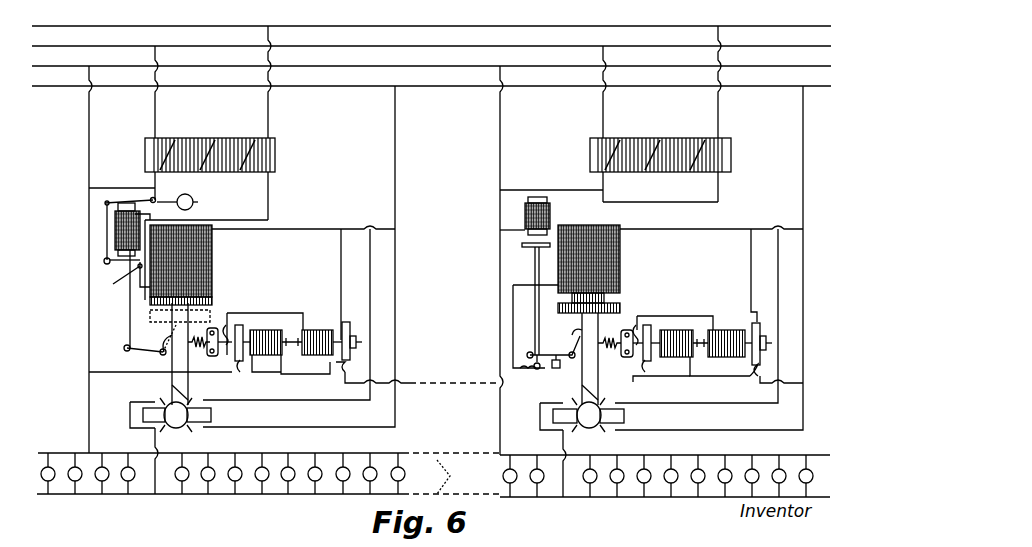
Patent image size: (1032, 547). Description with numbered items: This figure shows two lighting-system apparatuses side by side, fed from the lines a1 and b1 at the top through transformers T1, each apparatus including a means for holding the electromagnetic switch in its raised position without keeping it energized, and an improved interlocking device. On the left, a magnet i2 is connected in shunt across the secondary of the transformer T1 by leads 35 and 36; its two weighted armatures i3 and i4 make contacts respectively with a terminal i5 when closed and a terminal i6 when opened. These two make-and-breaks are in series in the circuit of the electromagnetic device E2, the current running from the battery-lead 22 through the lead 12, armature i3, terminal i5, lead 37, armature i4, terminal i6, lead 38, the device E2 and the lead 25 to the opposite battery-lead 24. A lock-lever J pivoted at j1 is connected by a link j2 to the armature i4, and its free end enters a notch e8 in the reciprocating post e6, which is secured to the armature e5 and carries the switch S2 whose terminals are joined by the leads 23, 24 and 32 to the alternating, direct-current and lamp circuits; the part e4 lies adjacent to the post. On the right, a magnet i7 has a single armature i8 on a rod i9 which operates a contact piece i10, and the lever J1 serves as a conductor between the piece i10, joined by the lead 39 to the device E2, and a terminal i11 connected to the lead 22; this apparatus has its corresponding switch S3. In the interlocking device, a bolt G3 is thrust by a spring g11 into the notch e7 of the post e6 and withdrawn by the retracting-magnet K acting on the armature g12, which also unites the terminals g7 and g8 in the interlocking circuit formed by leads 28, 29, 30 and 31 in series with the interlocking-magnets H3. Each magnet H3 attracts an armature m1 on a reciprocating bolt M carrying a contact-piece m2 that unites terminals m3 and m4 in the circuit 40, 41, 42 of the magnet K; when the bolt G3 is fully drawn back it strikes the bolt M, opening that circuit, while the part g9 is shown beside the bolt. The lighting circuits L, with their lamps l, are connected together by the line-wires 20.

The supply main a' a1 is at (350, 48).
The supply main b' b1 is at (350, 86).
The transformer T1 is at (276, 158).
The lead 12 is at (92, 188).
The lead 35 is at (244, 214).
The lead 36 is at (151, 214).
The lead 37 is at (107, 243).
The lead 38 is at (140, 288).
The battery-lead 22 is at (89, 291).
The lead 23 is at (370, 275).
The lead 24 is at (395, 280).
The lead 25 is at (291, 229).
The lead 28 is at (125, 373).
The lead 29 is at (290, 313).
The lead 30 is at (574, 375).
The lead 31 is at (735, 330).
The lead 32 is at (153, 446).
The lead 39 is at (535, 326).
The circuit lead 40 is at (664, 384).
The circuit lead 41 is at (306, 375).
The circuit lead 42 is at (341, 265).
The line-wires 20 is at (438, 477).
The magnet i2 is at (115, 229).
The armature i3 is at (158, 200).
The armature i4 is at (108, 265).
The terminal i5 is at (106, 206).
The terminal i6 is at (122, 284).
The magnet i7 is at (550, 214).
The armature i8 is at (522, 246).
The rod i9 is at (535, 270).
The contact piece i10 is at (532, 362).
The terminal i11 is at (564, 364).
The electromagnetic device E2 is at (212, 258).
The armature e4 is at (180, 317).
The armature e5 is at (212, 298).
The reciprocating post e6 is at (170, 386).
The notch e7 is at (380, 354).
The notch e8 is at (584, 325).
The terminal g7 is at (243, 372).
The terminal g8 is at (228, 322).
The coupling g9 is at (188, 372).
The spring g11 is at (200, 350).
The armature g12 is at (240, 325).
The bolt G3 is at (225, 350).
The retracting-magnet K is at (265, 328).
The reciprocating bolt M is at (496, 357).
The interlocking-magnet H3 is at (315, 330).
The armature m1 is at (342, 334).
The contact-piece m2 is at (350, 356).
The terminal m3 is at (559, 374).
The terminal m4 is at (350, 334).
The pivot j1 is at (164, 345).
The link j2 is at (125, 338).
The lock-lever J is at (145, 355).
The lever J1 is at (565, 350).
The switch S2 is at (176, 428).
The valve S''' S3 is at (589, 429).
The lighting circuits L is at (310, 455).
The lamp l is at (308, 482).